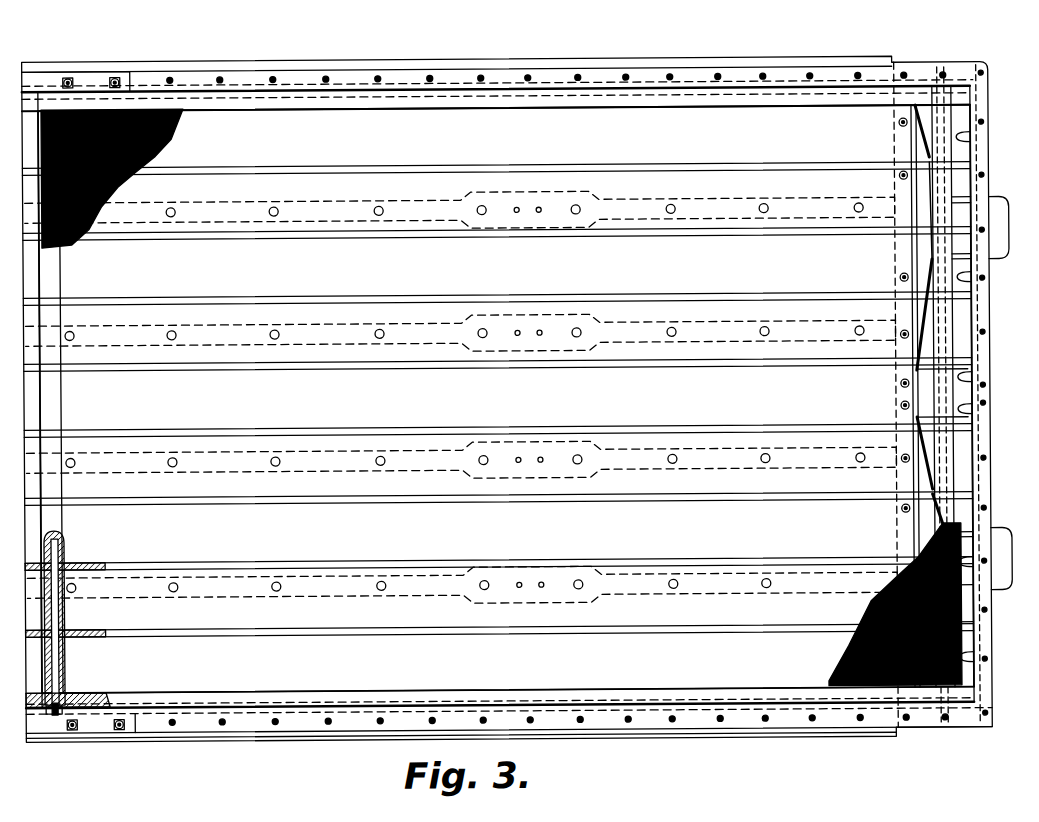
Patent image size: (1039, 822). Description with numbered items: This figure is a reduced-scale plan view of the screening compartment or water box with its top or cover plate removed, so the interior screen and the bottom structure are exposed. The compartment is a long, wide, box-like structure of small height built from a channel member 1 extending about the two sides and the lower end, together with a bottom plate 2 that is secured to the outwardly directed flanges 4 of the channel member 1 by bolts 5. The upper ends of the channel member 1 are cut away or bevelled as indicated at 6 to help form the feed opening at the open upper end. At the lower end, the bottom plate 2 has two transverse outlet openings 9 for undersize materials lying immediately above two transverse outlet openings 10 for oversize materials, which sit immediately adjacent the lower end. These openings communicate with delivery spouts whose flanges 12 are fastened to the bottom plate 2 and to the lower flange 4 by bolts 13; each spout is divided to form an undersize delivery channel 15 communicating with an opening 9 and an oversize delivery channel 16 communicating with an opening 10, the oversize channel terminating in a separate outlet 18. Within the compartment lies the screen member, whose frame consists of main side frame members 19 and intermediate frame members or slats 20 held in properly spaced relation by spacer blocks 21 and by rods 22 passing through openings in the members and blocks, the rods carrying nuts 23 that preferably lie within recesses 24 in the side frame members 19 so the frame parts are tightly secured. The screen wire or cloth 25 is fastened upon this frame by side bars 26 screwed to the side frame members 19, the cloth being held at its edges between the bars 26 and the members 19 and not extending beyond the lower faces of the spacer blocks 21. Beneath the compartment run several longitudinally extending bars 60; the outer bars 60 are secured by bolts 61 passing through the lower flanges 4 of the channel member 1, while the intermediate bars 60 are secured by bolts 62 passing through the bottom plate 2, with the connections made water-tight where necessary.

The channel member 1 is at (700, 60).
The bottom plate 2 is at (456, 118).
The outwardly directed flanges 4 is at (134, 72).
The bolts 5 is at (530, 74).
The cut away or bevelled portions 6 is at (72, 72).
The outlet or delivery openings for undersize materials 9 is at (915, 138).
The outlet or delivery openings for oversize materials 10 is at (970, 142).
The flanges of delivery spouts 12 is at (896, 256).
The bolts 13 is at (985, 78).
The undersize delivery channel 15 is at (915, 280).
The oversize delivery channel 16 is at (975, 278).
The outlet for oversize materials 18 is at (1000, 206).
The main side frame members 19 is at (90, 690).
The intermediate frame members or slats 20 is at (640, 172).
The spacer blocks 21 is at (60, 266).
The rods 22 is at (64, 556).
The nuts 23 is at (50, 714).
The recesses 24 is at (62, 714).
The screen wire or cloth 25 is at (172, 150).
The side bars 26 is at (395, 104).
The longitudinally extending members or bars 60 is at (550, 60).
The bolts 61 is at (66, 72).
The bolts 62 is at (275, 216).